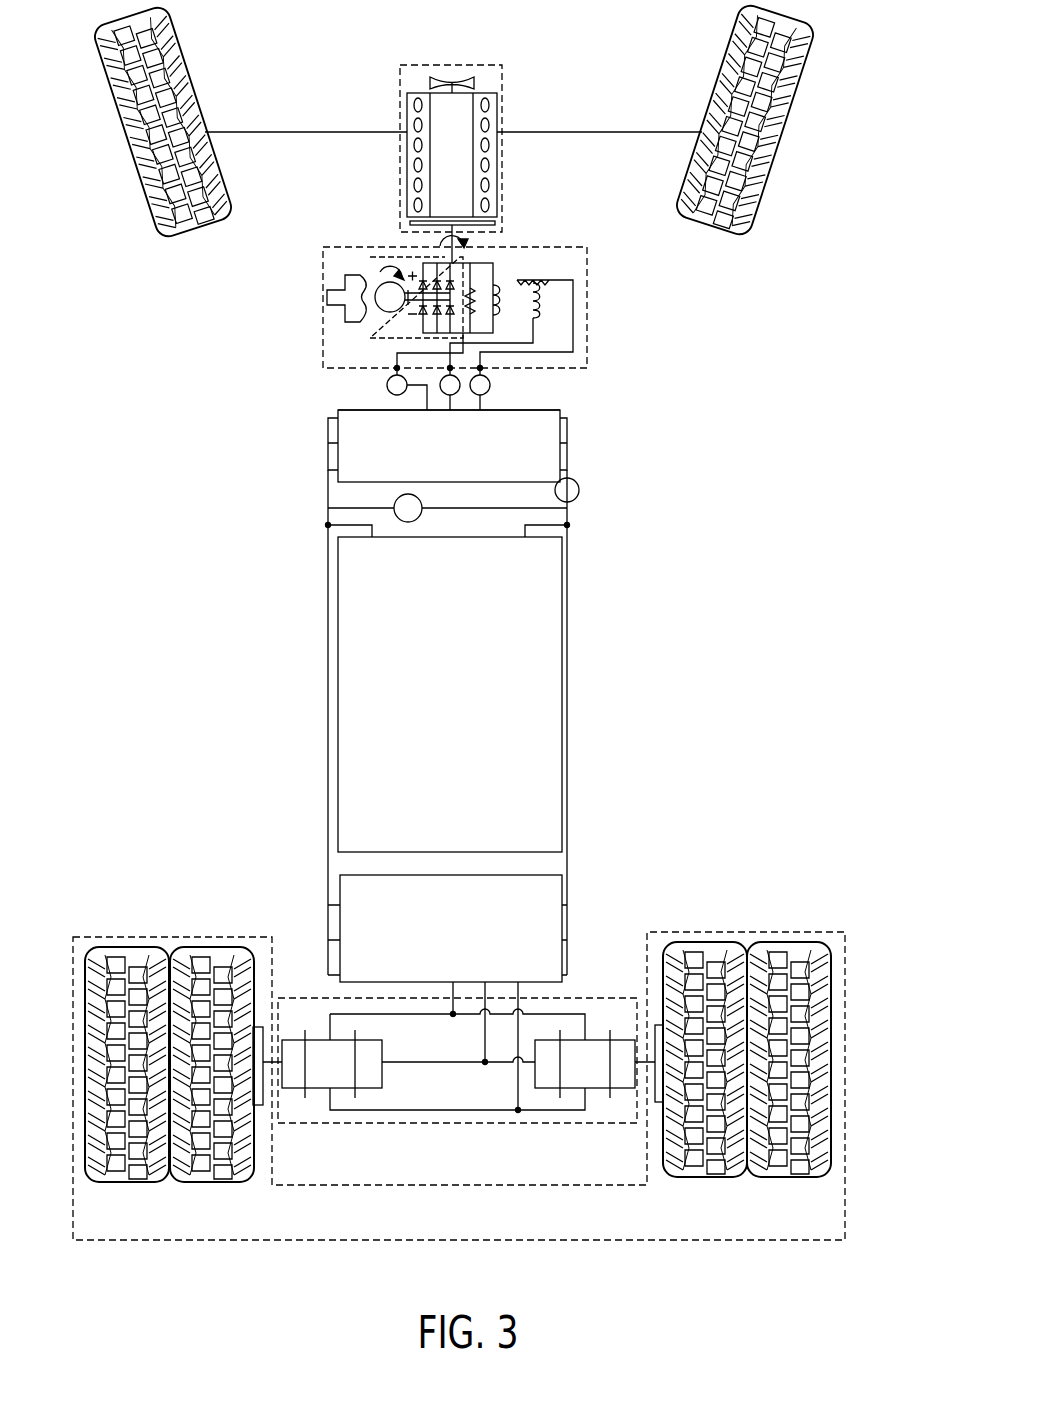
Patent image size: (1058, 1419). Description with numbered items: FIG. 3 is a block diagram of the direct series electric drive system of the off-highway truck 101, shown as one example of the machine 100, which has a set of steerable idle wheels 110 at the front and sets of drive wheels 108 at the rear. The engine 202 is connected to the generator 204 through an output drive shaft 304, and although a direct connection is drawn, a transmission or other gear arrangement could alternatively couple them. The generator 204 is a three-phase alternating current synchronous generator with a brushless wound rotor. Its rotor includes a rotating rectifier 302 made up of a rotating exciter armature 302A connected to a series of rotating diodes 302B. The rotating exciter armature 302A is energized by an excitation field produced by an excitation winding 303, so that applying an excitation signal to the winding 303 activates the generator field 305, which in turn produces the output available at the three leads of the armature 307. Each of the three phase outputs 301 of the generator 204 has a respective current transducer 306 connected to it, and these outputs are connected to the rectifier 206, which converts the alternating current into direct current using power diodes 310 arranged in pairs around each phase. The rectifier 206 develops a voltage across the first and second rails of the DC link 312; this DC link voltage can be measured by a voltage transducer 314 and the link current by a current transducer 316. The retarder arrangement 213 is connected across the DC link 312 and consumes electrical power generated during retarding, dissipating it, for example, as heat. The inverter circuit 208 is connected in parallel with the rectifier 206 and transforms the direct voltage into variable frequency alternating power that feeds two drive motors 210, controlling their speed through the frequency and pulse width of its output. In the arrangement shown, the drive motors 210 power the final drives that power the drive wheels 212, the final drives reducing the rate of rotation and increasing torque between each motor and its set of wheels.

The machine 100 is at (781, 384).
The off-highway truck 101 is at (145, 622).
The drive wheels 108 is at (206, 1165).
The idle wheels 110 is at (126, 118).
The engine 202 is at (400, 170).
The generator 204 is at (587, 313).
The rectifier 206 is at (567, 440).
The inverter circuit 208 is at (567, 922).
The drive motors 210 is at (497, 1123).
The drive wheels 212 is at (357, 1241).
The retarder arrangement 213 is at (562, 718).
The output 301 is at (534, 320).
The rotating rectifier 302 is at (370, 270).
The rotating exciter armature 302A is at (390, 297).
The rotating diodes 302B is at (405, 325).
The excitation winding 303 is at (340, 318).
The output drive shaft 304 is at (445, 246).
The generator field 305 is at (502, 262).
The current transducer 306 is at (387, 386).
The armature 307 is at (540, 283).
The power diodes 310 is at (560, 410).
The DC link 312 is at (328, 640).
The voltage transducer 314 is at (396, 505).
The current transducer 316 is at (580, 492).